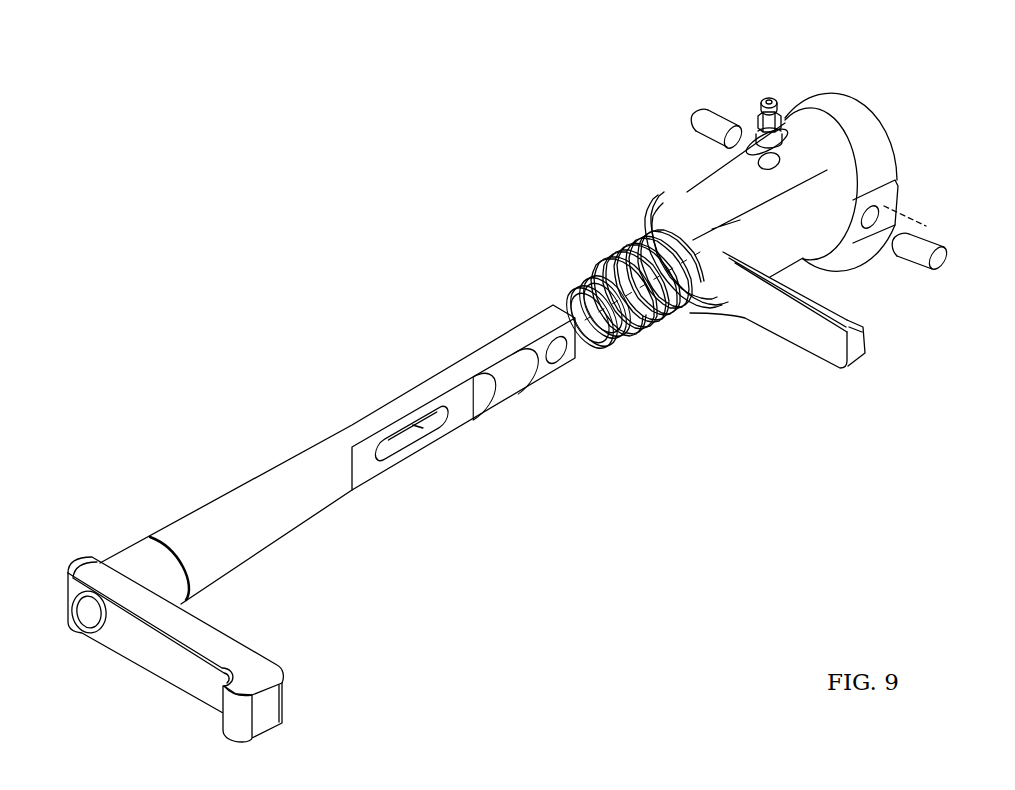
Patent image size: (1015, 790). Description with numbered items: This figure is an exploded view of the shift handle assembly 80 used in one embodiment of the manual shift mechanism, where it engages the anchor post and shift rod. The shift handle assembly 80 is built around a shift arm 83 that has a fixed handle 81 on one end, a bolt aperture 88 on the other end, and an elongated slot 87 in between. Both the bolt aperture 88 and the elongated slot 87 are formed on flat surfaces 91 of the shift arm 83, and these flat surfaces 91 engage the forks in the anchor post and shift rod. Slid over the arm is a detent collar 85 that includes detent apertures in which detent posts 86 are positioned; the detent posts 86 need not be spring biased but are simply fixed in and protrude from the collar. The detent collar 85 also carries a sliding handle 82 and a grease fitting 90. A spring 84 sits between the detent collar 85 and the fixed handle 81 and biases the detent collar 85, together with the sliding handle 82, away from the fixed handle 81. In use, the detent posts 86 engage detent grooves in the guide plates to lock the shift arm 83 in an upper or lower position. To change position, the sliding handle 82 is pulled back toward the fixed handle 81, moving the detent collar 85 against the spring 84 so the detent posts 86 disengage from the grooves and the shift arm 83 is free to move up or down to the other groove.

The shift handle assembly 80 is at (452, 308).
The fixed handle 81 is at (257, 708).
The sliding handle 82 is at (833, 348).
The shift arm 83 is at (372, 454).
The spring 84 is at (612, 258).
The detent collar 85 is at (840, 125).
The detent posts 86 is at (725, 122).
The elongated slot 87 is at (403, 440).
The bolt aperture 88 is at (555, 352).
The grease fitting 90 is at (772, 99).
The flat surfaces 91 is at (532, 368).